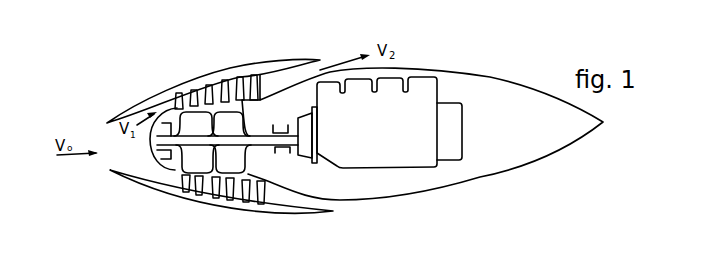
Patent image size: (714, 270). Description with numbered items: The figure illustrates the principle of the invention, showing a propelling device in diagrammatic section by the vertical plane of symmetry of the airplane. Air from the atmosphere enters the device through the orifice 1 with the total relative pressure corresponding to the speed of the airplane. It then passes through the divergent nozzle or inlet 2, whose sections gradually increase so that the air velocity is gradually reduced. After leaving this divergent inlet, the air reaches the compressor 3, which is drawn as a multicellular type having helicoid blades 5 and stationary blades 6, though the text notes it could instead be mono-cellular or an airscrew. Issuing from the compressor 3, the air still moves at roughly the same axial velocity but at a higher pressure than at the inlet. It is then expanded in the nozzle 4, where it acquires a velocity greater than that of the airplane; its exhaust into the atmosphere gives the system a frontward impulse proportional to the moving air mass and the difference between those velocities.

The orifice 1 is at (110, 145).
The divergent nozzle or inlet 2 is at (148, 172).
The compressor 3 is at (202, 143).
The nozzle 4 is at (297, 75).
The helicoid blades 5 is at (245, 196).
The stationary blades 6 is at (255, 85).